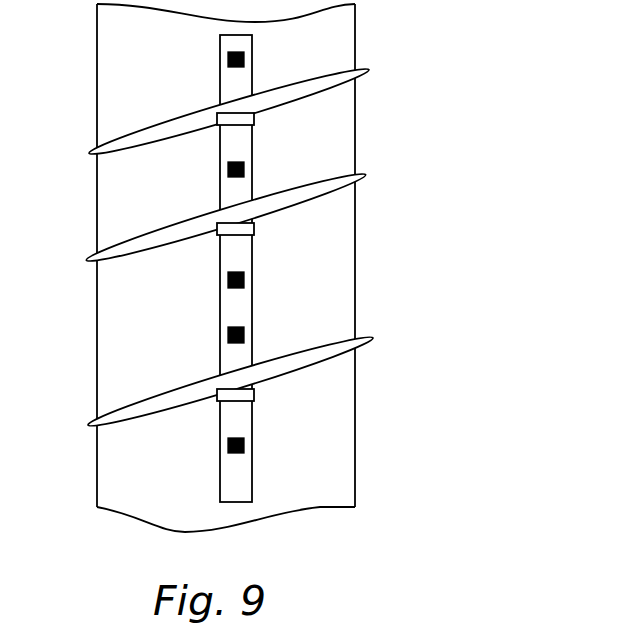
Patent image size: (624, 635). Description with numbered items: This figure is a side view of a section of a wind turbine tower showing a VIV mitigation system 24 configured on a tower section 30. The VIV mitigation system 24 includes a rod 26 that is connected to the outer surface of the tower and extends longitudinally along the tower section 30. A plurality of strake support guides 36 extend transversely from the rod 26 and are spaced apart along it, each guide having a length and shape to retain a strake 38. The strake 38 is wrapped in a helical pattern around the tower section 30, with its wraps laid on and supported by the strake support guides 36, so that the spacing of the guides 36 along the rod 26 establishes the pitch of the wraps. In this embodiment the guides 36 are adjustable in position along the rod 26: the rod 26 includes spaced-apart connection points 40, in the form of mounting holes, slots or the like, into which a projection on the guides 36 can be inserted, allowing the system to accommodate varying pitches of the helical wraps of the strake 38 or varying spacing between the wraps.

The VIV mitigation system 24 is at (460, 141).
The rod 26 is at (253, 307).
The tower section 30 is at (110, 83).
The strake support guide 36 is at (237, 236).
The strake 38 is at (327, 90).
The connection point 40 is at (223, 166).